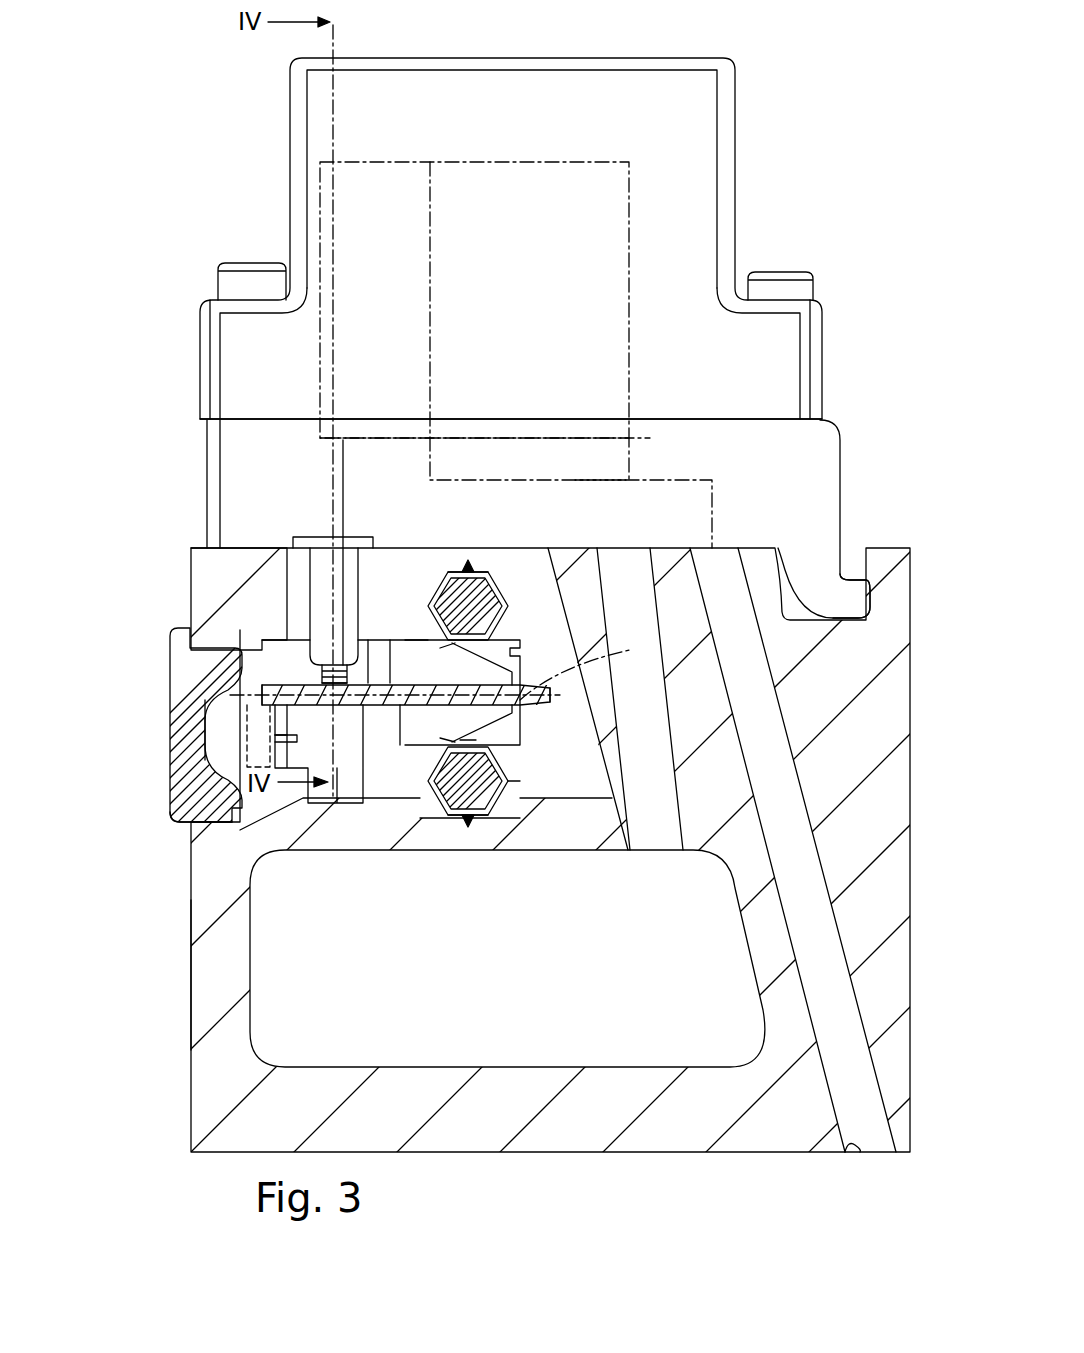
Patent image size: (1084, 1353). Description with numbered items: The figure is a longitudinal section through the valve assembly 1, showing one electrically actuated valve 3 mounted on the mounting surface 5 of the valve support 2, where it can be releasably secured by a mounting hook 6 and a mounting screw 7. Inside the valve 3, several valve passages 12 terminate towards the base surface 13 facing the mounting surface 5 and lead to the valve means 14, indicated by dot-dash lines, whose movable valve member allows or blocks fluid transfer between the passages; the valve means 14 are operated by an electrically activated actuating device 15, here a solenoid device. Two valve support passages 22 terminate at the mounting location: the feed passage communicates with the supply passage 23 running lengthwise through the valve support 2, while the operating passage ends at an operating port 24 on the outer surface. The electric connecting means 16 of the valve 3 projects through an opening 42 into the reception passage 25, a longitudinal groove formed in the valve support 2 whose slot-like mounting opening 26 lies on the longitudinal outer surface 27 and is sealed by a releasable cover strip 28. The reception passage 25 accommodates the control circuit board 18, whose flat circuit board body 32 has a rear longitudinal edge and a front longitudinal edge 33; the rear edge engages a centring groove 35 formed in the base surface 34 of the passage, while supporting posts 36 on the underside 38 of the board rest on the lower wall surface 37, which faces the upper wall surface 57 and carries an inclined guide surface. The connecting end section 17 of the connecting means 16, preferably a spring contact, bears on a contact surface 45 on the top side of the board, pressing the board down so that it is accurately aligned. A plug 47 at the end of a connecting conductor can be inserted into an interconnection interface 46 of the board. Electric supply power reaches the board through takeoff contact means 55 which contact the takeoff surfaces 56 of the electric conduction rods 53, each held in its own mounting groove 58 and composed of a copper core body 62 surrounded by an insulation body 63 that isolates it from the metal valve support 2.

The valve assembly 1 is at (796, 141).
The valve support 2 is at (570, 1130).
The electrically actuated valve 3 is at (695, 230).
The mounting surface 5 is at (658, 550).
The mounting hook 6 is at (845, 598).
The mounting screw 7 is at (252, 288).
The valve passage 12 is at (553, 462).
The base surface 13 is at (653, 552).
The valve means 14 is at (632, 450).
The actuating device 15 is at (605, 297).
The electric connecting means 16 is at (335, 560).
The connecting end section 17 is at (340, 672).
The control circuit board 18 is at (395, 640).
The valve support passage 22 is at (648, 850).
The supply passage 23 is at (500, 1030).
The operating port 24 is at (855, 1155).
The reception passage 25 is at (222, 740).
The mounting opening 26 is at (178, 800).
The longitudinal outer surface 27 is at (190, 968).
The cover strip 28 is at (175, 660).
The circuit board body 32 is at (620, 654).
The longitudinal edge 33 is at (262, 690).
The base surface 34 is at (508, 655).
The centring groove 35 is at (552, 695).
The supporting post 36 is at (318, 805).
The lower wall surface 37 is at (345, 805).
The side of circuit board body 38 is at (368, 682).
The opening 42 is at (287, 580).
The contact surface 45 is at (340, 668).
The interconnection interface 46 is at (260, 762).
The plug 47 is at (247, 720).
The electric conduction rod 53 is at (468, 565).
The takeoff contact means 55 is at (520, 600).
The takeoff surface 56 is at (482, 645).
The upper wall surface 57 is at (412, 650).
The mounting groove 58 is at (488, 578).
The core body 62 is at (470, 815).
The insulation body 63 is at (510, 790).